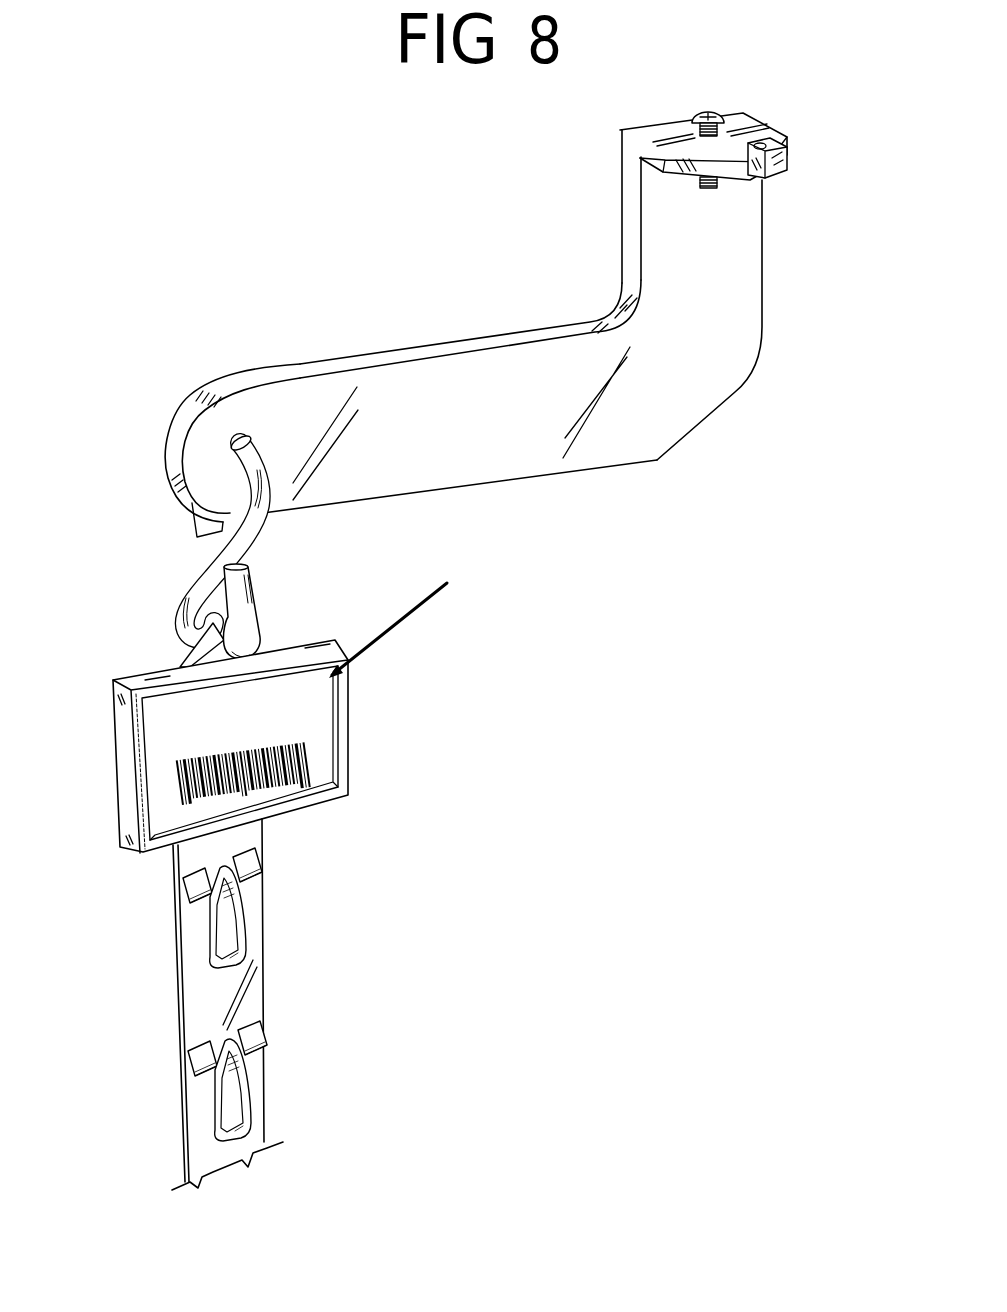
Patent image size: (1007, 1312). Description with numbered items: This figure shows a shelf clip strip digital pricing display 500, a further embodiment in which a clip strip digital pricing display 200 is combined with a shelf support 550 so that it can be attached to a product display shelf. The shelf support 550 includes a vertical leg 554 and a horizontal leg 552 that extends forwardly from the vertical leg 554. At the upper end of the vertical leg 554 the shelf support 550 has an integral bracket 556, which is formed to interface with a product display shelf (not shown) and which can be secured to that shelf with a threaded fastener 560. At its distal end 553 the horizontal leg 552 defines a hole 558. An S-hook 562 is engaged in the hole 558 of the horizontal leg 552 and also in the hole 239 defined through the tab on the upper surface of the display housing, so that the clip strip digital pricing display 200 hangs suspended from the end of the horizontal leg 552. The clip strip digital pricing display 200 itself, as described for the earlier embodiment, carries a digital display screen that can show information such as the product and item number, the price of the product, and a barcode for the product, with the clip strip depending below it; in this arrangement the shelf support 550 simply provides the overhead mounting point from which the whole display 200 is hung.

The shelf clip strip digital pricing display 500 is at (147, 208).
The shelf support 550 is at (660, 463).
The horizontal leg 552 is at (357, 357).
The distal end 553 is at (168, 422).
The vertical leg 554 is at (618, 203).
The integral bracket 556 is at (766, 122).
The hole 558 is at (249, 434).
The threaded fastener 560 is at (703, 110).
The S-hook 562 is at (195, 577).
The hole 239 is at (222, 643).
The clip strip digital pricing display 200 is at (268, 925).